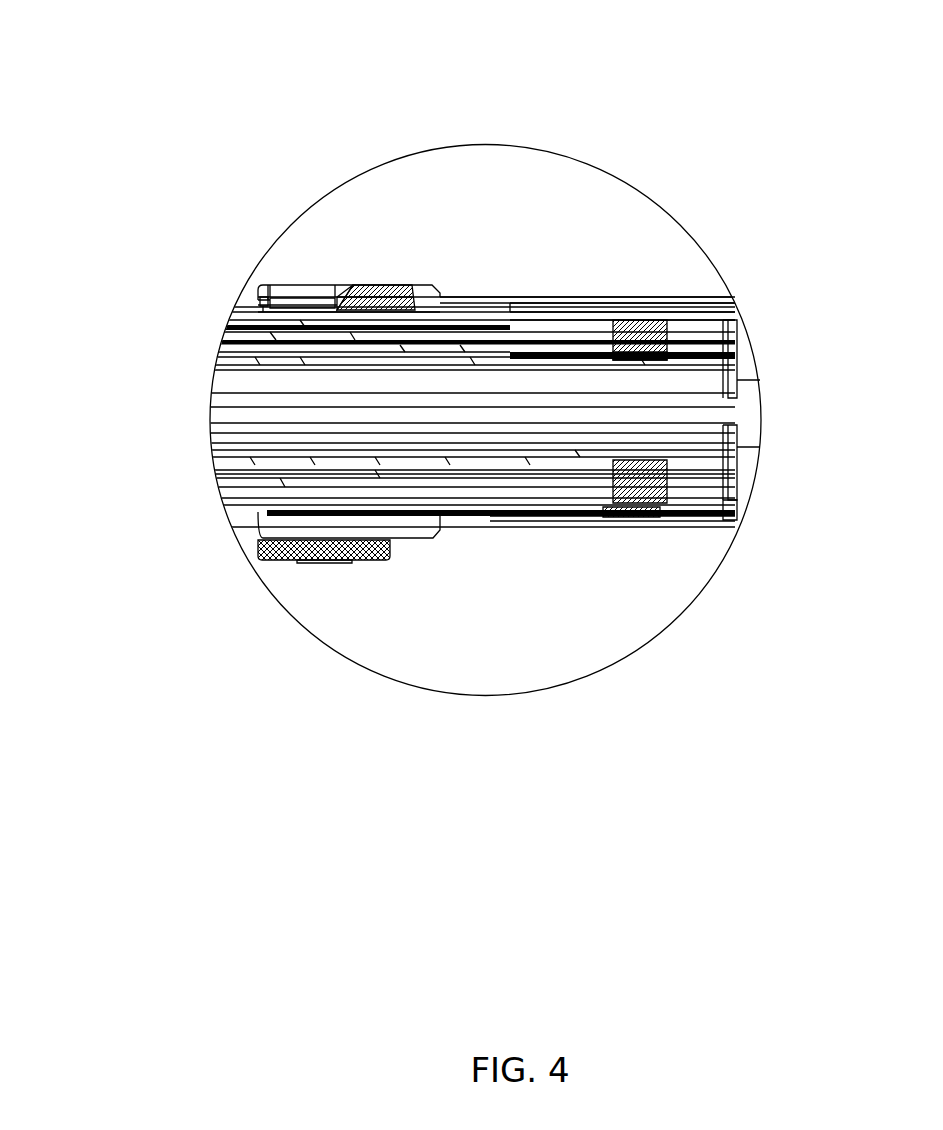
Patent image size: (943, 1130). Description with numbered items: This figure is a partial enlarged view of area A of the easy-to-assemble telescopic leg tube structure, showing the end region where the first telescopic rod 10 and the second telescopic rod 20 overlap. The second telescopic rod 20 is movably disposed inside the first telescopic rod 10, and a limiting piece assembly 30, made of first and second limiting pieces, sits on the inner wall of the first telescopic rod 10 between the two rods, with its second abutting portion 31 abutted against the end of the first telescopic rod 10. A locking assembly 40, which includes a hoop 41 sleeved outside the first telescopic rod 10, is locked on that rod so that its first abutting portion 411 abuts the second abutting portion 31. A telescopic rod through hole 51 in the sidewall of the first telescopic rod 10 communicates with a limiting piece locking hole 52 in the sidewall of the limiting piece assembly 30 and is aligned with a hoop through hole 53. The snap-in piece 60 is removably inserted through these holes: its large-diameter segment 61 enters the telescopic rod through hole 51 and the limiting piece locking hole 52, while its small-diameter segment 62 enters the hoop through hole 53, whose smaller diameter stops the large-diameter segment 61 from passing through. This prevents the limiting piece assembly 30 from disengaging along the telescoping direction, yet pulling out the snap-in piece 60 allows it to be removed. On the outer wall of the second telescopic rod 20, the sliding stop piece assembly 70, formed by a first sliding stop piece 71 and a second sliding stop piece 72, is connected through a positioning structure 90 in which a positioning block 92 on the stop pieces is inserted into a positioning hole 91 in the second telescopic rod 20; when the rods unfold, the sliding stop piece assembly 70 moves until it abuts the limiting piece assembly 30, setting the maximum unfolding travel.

The area A is at (608, 173).
The first telescopic rod 10 is at (517, 300).
The second telescopic rod 20 is at (447, 317).
The limiting piece assembly 30 is at (480, 307).
The second abutting portion 31 is at (258, 312).
The locking assembly 40 is at (262, 286).
The hoop 41 is at (257, 295).
The first abutting portion 411 is at (265, 302).
The telescopic rod through hole 51 is at (308, 290).
The limiting piece locking hole 52 is at (408, 293).
The hoop through hole 53 is at (338, 297).
The snap-in piece 60 is at (383, 287).
The large-diameter segment 61 is at (382, 297).
The small-diameter segment 62 is at (328, 305).
The sliding stop piece assembly 70 is at (700, 517).
The first sliding stop piece 71 is at (537, 308).
The second sliding stop piece 72 is at (727, 510).
The positioning structure 90 is at (613, 313).
The positioning hole 91 is at (673, 312).
The positioning block 92 is at (650, 313).